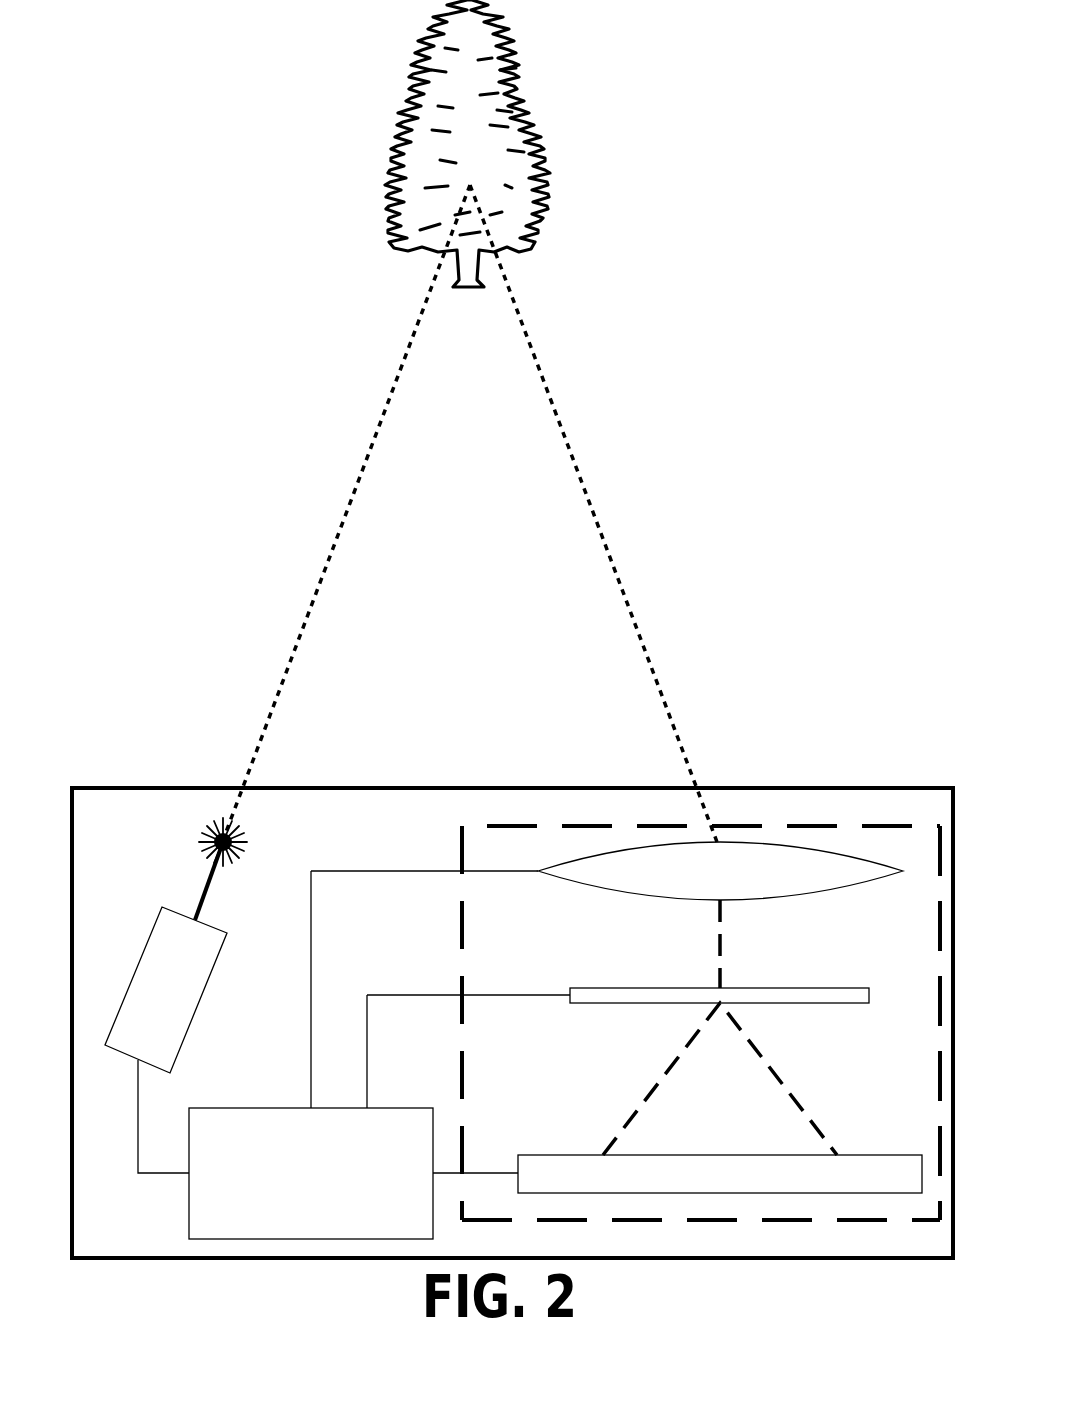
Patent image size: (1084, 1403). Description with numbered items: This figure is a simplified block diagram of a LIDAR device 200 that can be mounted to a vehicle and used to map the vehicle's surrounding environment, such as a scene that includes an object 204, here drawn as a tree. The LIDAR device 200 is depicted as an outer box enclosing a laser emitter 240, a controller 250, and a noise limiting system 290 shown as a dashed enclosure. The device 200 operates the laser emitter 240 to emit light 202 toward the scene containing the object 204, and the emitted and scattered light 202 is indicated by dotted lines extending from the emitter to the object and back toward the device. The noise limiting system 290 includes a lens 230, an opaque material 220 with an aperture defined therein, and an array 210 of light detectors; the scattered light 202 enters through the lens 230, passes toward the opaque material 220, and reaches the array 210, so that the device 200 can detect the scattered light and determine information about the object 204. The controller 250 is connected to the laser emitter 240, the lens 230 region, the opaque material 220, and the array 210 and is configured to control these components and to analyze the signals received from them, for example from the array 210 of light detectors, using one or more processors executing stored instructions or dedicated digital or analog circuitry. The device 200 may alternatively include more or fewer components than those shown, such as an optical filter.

The LIDAR device 200 is at (160, 784).
The light 202 is at (300, 656).
The object 204 is at (495, 88).
The array of light detectors 210 is at (585, 1168).
The opaque material 220 is at (595, 990).
The lens 230 is at (595, 866).
The laser emitter 240 is at (195, 988).
The controller 250 is at (337, 1186).
The noise limiting system 290 is at (458, 918).